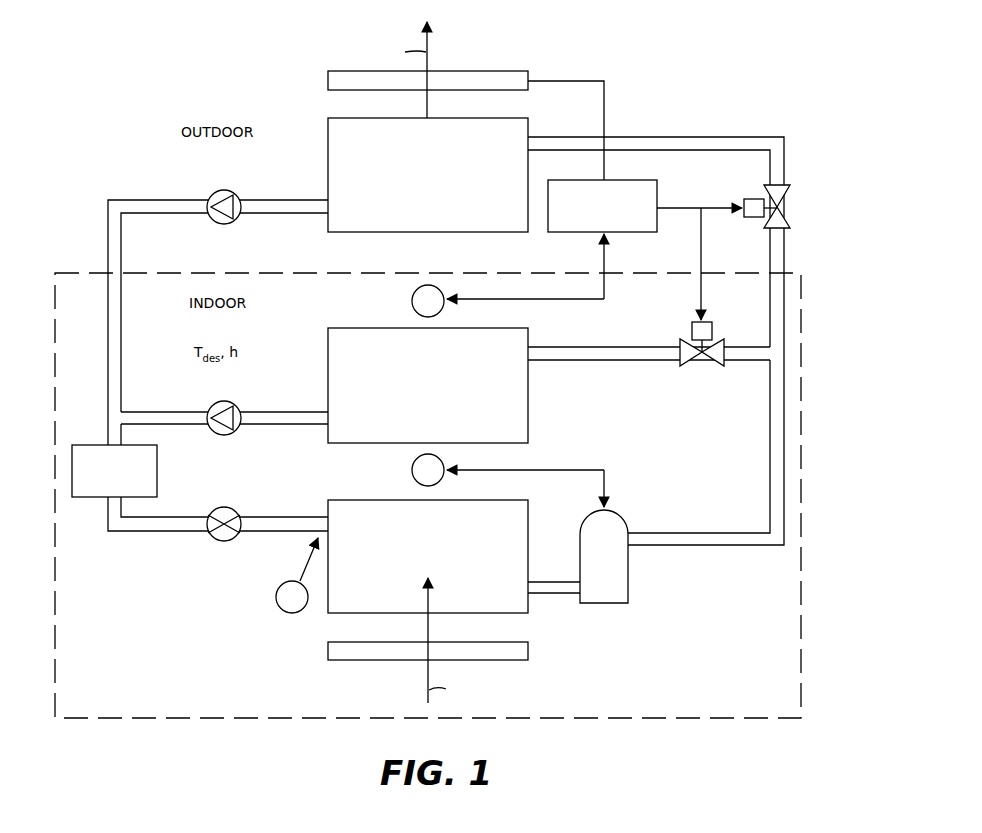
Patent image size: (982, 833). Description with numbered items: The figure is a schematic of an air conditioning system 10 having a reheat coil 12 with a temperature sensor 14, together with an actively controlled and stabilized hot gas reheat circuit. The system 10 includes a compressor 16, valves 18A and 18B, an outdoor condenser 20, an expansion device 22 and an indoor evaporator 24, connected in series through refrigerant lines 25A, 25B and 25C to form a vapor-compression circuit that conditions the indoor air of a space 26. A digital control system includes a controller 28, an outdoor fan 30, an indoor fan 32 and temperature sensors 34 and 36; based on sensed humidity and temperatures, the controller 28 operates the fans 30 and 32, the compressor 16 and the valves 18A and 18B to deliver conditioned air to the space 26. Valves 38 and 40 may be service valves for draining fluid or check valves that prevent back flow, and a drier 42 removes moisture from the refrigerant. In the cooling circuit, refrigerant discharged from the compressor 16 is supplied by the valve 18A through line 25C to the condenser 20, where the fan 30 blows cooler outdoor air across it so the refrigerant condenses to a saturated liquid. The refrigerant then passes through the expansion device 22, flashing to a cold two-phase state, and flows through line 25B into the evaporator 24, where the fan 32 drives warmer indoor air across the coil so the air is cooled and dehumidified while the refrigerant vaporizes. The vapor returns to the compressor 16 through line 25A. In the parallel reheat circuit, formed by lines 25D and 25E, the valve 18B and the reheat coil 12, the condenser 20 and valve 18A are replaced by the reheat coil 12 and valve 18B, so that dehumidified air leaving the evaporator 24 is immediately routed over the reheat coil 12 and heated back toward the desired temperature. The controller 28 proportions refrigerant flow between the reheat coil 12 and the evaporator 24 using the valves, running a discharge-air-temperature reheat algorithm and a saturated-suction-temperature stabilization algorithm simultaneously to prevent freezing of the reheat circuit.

The air conditioning system 10 is at (152, 30).
The reheat coil 12 is at (470, 328).
The temperature sensor 14 is at (284, 616).
The compressor 16 is at (630, 567).
The valve 18A is at (790, 208).
The valve 18B is at (692, 331).
The outdoor condenser 20 is at (470, 118).
The expansion device 22 is at (231, 539).
The indoor evaporator 24 is at (470, 500).
The refrigerant line 25A is at (553, 582).
The refrigerant line 25B is at (284, 200).
The refrigerant line 25C is at (664, 137).
The refrigerant line 25D is at (284, 412).
The refrigerant line 25E is at (603, 372).
The space 26 is at (442, 273).
The controller 28 is at (630, 180).
The outdoor fan 30 is at (470, 71).
The indoor fan 32 is at (470, 642).
The temperature sensor 34 is at (412, 301).
The temperature sensor 36 is at (412, 470).
The valve 38 is at (230, 222).
The valve 40 is at (231, 433).
The drier 42 is at (157, 471).